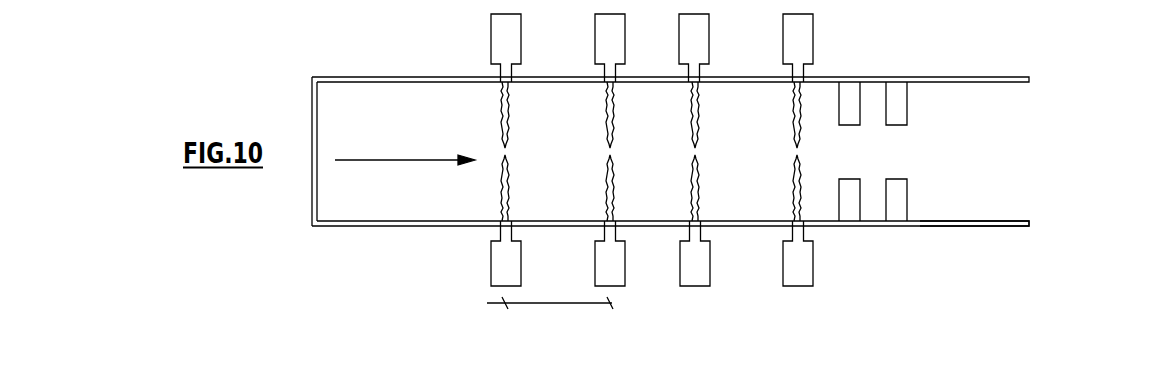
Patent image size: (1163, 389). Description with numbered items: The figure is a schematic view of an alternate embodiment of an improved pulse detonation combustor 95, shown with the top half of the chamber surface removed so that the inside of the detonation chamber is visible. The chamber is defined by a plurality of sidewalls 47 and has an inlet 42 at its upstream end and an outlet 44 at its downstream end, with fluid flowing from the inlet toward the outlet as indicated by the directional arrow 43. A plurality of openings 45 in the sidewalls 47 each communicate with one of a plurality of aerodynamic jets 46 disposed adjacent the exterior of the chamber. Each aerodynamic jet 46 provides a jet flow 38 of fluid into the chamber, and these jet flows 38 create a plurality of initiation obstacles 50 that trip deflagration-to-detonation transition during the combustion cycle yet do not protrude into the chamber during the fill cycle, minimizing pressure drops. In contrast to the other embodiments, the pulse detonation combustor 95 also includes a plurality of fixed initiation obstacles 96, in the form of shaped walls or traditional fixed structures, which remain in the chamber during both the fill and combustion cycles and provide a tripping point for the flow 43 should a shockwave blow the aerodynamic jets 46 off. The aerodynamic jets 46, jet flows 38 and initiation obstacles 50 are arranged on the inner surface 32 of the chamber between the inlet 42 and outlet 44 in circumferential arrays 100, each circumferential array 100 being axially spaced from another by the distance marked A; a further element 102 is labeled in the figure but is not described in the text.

The inner surface 32 is at (367, 82).
The jet flow 38 is at (605, 112).
The inlet 42 is at (346, 240).
The directional arrow 43 is at (397, 160).
The outlet 44 is at (1022, 190).
The openings 45 is at (699, 86).
The aerodynamic jets 46 is at (491, 26).
The sidewalls 47 is at (955, 77).
The initiation obstacles 50 is at (611, 214).
The pulse detonation combustor 95 is at (716, 160).
The fixed initiation obstacles 96 is at (908, 108).
The circumferential arrays 100 is at (462, 298).
The electrode spacing 102 is at (632, 305).